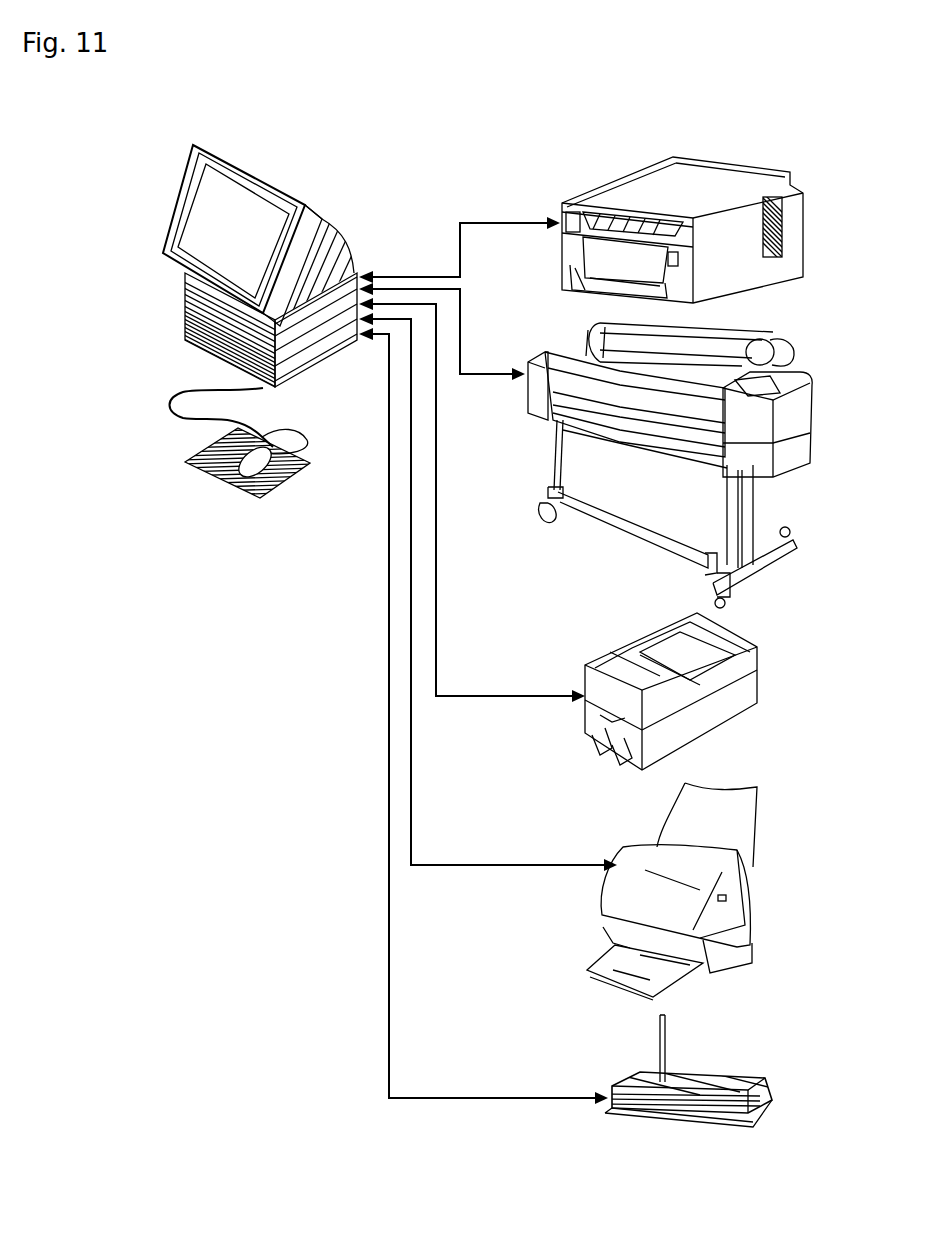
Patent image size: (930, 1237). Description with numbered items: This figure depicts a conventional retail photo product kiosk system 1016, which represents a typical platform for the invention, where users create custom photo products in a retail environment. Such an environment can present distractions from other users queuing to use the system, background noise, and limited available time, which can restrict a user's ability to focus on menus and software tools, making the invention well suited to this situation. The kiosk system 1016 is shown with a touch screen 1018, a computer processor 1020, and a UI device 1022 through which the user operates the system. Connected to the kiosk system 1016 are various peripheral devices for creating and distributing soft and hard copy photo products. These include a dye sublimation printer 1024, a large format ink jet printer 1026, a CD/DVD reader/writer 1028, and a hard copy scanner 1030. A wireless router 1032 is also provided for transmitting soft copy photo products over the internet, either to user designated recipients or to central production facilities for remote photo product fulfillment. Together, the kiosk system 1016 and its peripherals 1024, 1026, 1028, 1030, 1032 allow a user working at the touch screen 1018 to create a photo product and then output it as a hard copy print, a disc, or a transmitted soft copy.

The kiosk system 1016 is at (330, 217).
The touch screen 1018 is at (207, 180).
The computer processor 1020 is at (295, 365).
The UI device 1022 is at (268, 463).
The dye sublimation printer 1024 is at (763, 168).
The large format ink jet printer 1026 is at (777, 338).
The CD/DVD reader/writer 1028 is at (742, 648).
The hard copy scanner 1030 is at (755, 880).
The wireless router 1032 is at (762, 1092).